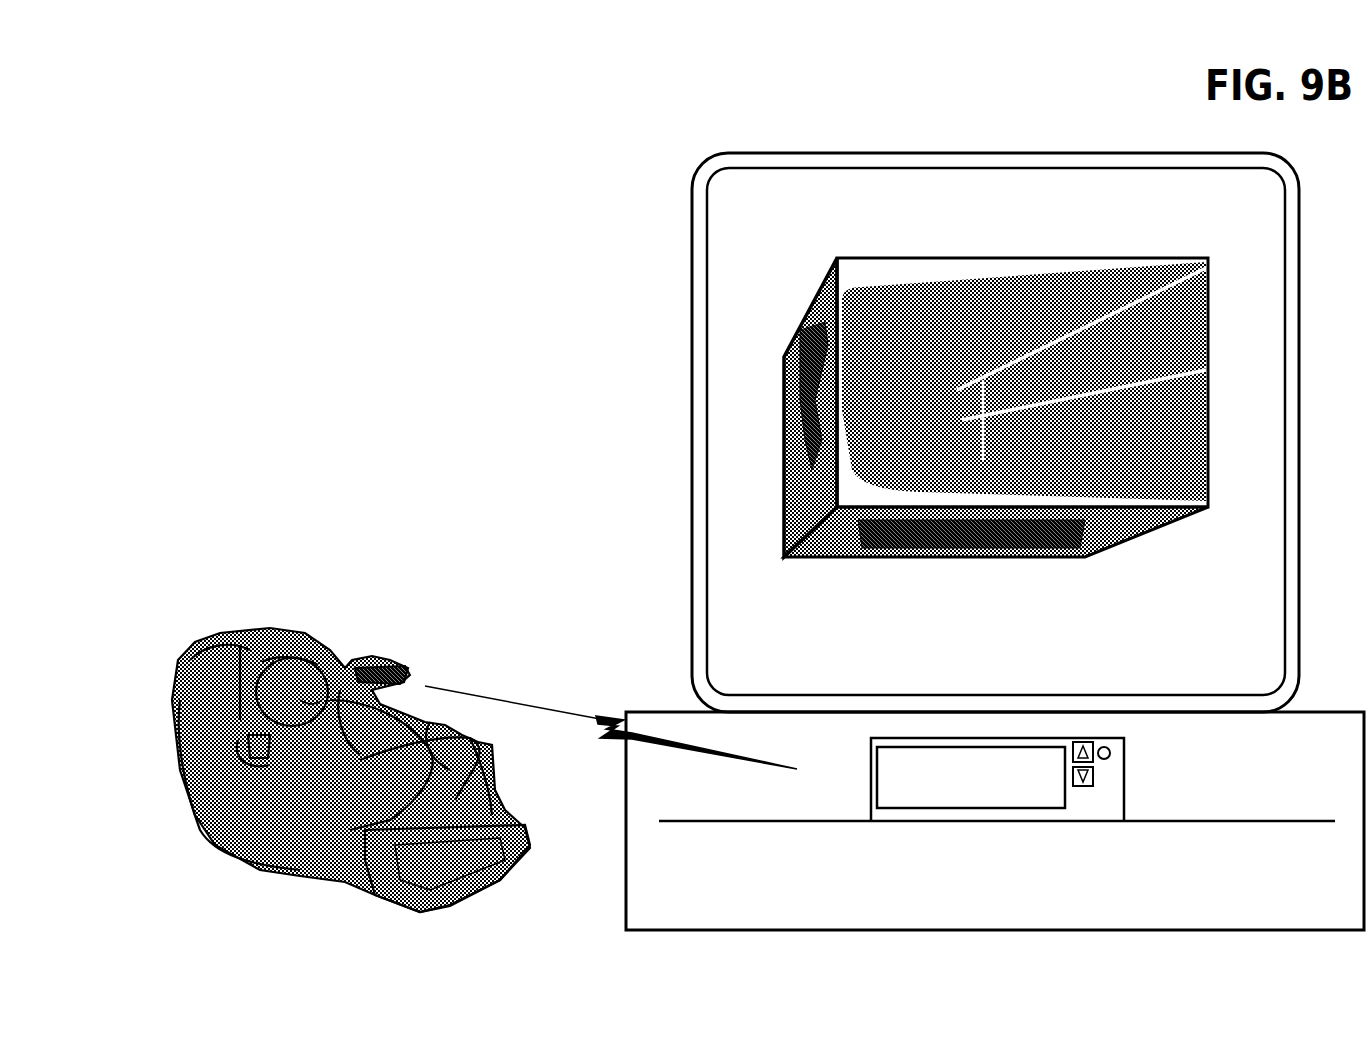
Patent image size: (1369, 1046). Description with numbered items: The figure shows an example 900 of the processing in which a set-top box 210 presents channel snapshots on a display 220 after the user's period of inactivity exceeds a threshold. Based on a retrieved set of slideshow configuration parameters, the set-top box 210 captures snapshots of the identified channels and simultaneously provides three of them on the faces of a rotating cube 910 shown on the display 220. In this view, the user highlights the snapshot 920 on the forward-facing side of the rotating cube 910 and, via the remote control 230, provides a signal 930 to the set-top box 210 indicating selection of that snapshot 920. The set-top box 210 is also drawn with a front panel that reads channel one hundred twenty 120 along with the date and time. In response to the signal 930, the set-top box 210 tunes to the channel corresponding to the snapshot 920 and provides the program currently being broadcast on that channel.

The example 900 is at (322, 91).
The display 220 is at (778, 164).
The rotating cube 910 is at (722, 348).
The snapshot 920 is at (1090, 266).
The set-top box 210 is at (978, 818).
The channel indicator 120 is at (997, 779).
The signal 930 is at (549, 711).
The remote control 230 is at (404, 666).